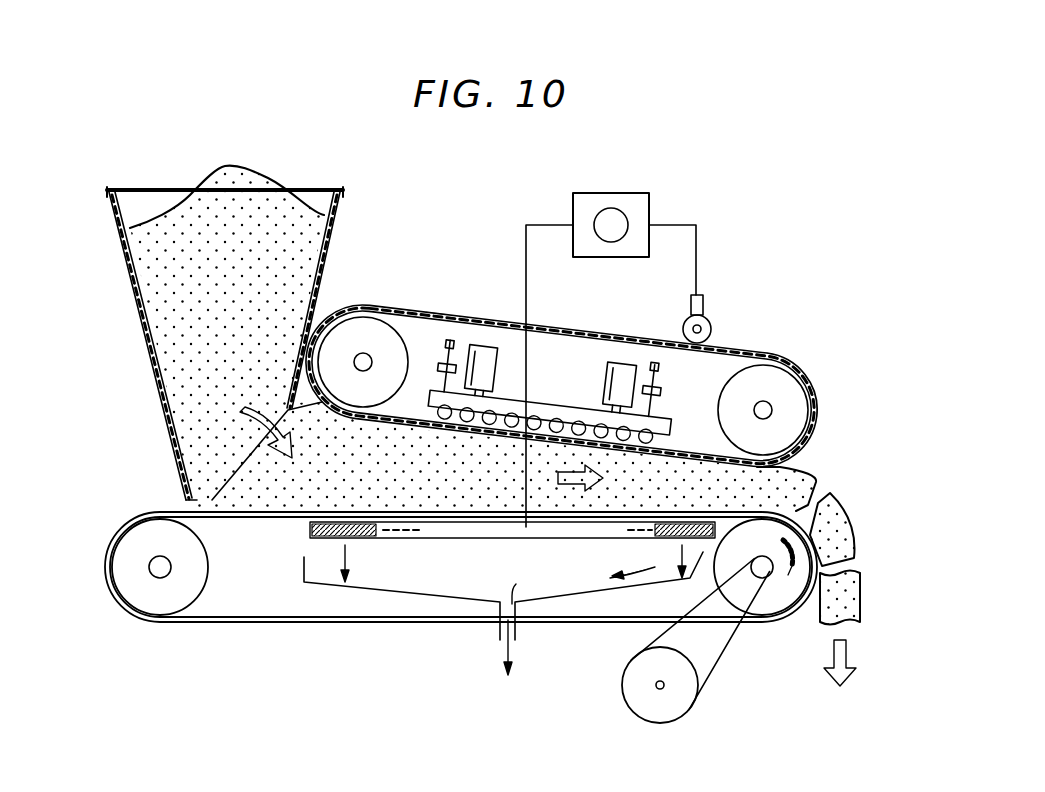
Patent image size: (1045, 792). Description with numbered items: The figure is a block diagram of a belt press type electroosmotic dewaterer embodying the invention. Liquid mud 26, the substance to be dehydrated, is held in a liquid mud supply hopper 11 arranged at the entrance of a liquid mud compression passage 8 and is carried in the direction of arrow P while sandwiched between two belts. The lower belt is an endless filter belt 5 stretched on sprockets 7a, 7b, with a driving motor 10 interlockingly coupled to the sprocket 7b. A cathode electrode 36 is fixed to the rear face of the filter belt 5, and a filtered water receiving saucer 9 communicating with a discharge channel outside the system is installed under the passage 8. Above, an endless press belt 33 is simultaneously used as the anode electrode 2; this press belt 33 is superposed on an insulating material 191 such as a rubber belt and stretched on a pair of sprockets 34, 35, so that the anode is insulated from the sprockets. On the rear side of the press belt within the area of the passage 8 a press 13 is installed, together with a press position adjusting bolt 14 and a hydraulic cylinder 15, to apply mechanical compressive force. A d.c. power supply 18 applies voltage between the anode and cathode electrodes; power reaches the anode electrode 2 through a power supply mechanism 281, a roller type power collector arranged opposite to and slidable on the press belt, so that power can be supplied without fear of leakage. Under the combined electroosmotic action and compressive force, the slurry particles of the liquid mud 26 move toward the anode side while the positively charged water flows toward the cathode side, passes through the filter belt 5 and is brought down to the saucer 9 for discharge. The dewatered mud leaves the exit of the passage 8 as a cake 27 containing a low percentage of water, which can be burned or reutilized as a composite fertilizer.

The anode electrode 2 is at (752, 345).
The filter belt 5 is at (400, 622).
The sprocket 7a is at (168, 598).
The sprocket 7b is at (775, 600).
The liquid mud compression passage 8 is at (300, 490).
The filtered water receiving saucer 9 is at (310, 585).
The driving motor 10 is at (682, 692).
The liquid mud supply hopper 11 is at (147, 345).
The press 13 is at (547, 410).
The press position adjusting bolt 14 is at (450, 343).
The hydraulic cylinder 15 is at (485, 360).
The d.c. power supply 18 is at (617, 193).
The liquid mud 26 is at (285, 190).
The cake 27 is at (862, 598).
The press belt 33 is at (426, 308).
The sprocket 34 is at (363, 345).
The sprocket 35 is at (790, 408).
The cathode electrode 36 is at (485, 530).
The insulating material 191 is at (805, 370).
The power supply mechanism 281 is at (707, 305).
The arrow P is at (574, 468).